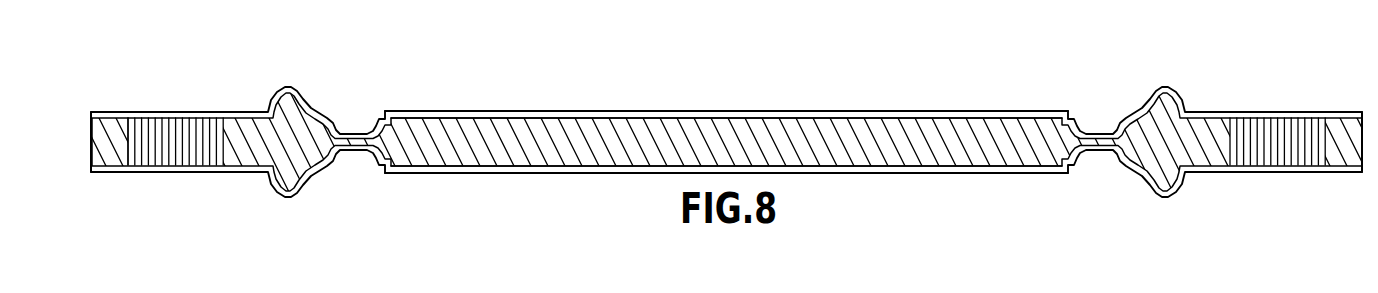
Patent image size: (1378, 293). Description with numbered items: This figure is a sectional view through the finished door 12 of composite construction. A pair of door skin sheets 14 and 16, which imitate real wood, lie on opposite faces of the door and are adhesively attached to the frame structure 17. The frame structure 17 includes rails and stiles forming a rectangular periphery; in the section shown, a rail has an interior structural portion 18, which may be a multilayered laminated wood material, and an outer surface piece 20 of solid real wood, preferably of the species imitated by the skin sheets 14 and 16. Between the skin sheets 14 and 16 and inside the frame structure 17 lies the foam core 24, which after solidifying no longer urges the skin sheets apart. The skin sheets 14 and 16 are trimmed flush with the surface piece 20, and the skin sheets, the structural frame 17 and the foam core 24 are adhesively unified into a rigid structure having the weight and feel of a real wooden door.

The door 12 is at (1032, 187).
The door skin sheet 14 is at (578, 109).
The door skin sheet 16 is at (548, 175).
The frame structure 17 is at (1346, 113).
The interior structural portion 18 is at (177, 122).
The outer surface piece 20 is at (117, 123).
The foam core 24 is at (450, 132).